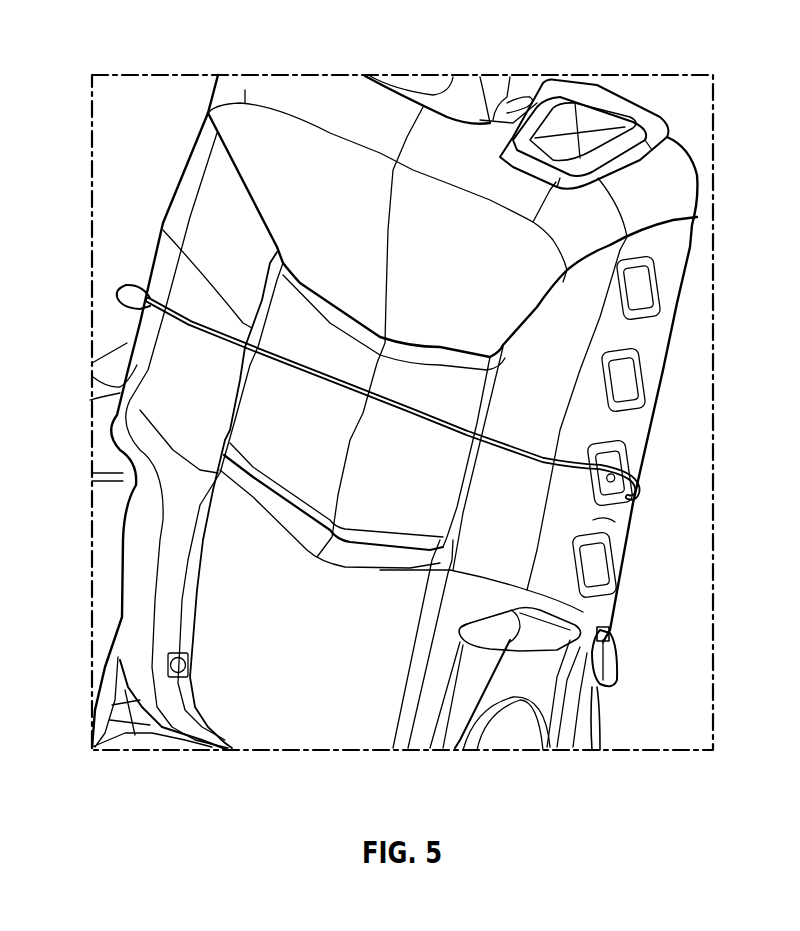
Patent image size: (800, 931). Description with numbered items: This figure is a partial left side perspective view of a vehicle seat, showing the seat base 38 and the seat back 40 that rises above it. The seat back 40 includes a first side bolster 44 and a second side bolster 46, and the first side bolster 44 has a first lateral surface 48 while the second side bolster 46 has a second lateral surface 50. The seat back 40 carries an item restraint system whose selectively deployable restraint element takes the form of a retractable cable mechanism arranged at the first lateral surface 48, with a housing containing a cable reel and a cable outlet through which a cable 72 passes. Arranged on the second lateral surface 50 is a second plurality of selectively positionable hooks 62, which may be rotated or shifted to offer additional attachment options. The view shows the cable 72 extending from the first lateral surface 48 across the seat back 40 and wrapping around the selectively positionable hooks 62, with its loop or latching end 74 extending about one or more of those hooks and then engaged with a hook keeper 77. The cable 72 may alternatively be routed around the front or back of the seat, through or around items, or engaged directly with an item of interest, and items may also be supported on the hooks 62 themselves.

The seat back 40 is at (86, 52).
The cable 72 is at (407, 403).
The first lateral surface 48 is at (123, 500).
The first side bolster 44 is at (136, 568).
The second side bolster 46 is at (613, 337).
The second plurality of selectively positionable hooks 62 is at (667, 398).
The second lateral surface 50 is at (600, 523).
The latching end 74 is at (617, 660).
The hook keeper 77 is at (611, 633).
The seat base 38 is at (138, 728).